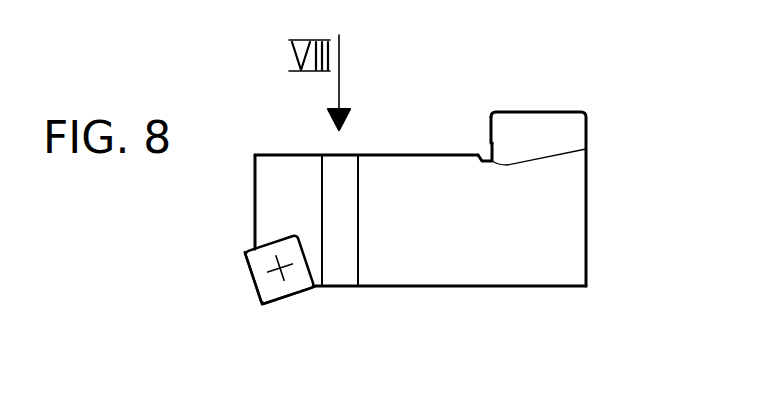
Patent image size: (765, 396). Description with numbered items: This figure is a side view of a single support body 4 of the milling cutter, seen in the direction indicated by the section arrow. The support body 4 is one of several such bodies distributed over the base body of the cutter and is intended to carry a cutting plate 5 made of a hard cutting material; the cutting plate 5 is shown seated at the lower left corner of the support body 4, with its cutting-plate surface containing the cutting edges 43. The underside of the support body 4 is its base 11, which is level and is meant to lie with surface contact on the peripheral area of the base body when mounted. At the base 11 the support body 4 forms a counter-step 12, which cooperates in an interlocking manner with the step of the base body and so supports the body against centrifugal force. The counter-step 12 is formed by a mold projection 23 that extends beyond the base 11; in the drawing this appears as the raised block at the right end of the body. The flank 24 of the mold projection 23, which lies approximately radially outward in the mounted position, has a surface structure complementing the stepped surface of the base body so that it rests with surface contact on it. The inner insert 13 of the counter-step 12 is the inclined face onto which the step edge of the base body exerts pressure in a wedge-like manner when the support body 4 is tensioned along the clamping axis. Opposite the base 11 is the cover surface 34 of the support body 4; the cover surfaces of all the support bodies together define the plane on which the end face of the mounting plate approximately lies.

The support body 4 is at (558, 236).
The cutting plate 5 is at (261, 262).
The base 11 is at (410, 155).
The counter-step 12 is at (466, 139).
The inner insert 13 is at (586, 149).
The mold projection 23 is at (526, 133).
The flank 24 is at (490, 125).
The cover surface 34 is at (525, 287).
The cutting edge 43 is at (286, 297).